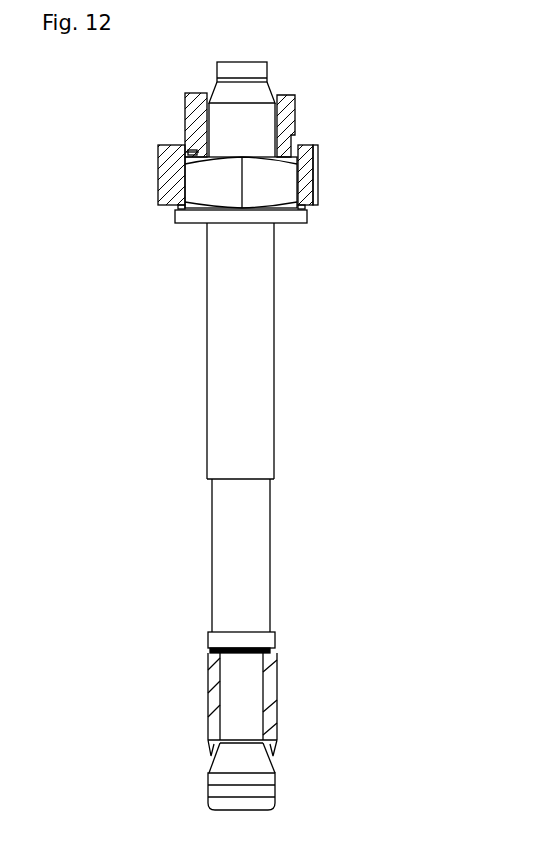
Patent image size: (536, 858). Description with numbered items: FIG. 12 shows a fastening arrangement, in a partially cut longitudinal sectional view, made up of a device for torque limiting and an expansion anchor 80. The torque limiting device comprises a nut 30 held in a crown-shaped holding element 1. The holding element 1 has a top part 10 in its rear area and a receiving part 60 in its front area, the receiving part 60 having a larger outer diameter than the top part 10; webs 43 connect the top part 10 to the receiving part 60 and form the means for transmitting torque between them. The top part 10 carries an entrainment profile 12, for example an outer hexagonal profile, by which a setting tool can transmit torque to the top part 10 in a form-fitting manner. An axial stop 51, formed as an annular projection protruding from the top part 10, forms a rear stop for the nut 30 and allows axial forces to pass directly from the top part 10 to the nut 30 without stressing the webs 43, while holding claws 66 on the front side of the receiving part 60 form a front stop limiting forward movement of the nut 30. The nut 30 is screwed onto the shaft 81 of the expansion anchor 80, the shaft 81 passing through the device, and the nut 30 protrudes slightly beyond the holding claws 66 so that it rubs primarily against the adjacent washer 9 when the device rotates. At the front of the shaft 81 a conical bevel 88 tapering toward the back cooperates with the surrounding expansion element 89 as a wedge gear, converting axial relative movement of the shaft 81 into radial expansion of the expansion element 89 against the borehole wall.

The holding element 1 is at (237, 135).
The washer 9 is at (210, 218).
The top part 10 is at (288, 98).
The entrainment profile 12 is at (298, 100).
The nut 30 is at (222, 185).
The webs 43 is at (185, 145).
The axial stop 51 is at (197, 153).
The receiving part 60 is at (310, 178).
The holding claws 66 is at (307, 210).
The expansion anchor 80 is at (311, 438).
The shaft 81 is at (258, 401).
The bevel 88 is at (252, 753).
The expansion element 89 is at (273, 700).